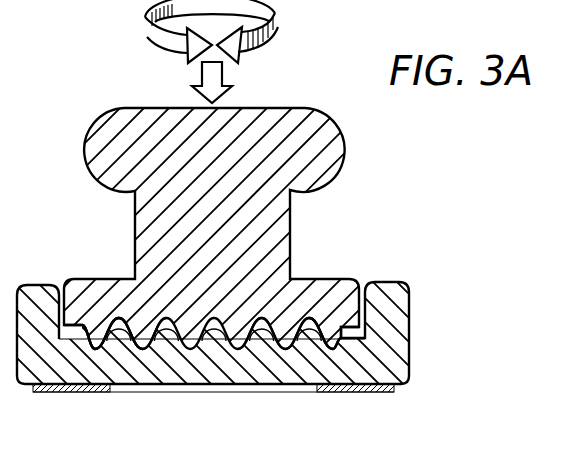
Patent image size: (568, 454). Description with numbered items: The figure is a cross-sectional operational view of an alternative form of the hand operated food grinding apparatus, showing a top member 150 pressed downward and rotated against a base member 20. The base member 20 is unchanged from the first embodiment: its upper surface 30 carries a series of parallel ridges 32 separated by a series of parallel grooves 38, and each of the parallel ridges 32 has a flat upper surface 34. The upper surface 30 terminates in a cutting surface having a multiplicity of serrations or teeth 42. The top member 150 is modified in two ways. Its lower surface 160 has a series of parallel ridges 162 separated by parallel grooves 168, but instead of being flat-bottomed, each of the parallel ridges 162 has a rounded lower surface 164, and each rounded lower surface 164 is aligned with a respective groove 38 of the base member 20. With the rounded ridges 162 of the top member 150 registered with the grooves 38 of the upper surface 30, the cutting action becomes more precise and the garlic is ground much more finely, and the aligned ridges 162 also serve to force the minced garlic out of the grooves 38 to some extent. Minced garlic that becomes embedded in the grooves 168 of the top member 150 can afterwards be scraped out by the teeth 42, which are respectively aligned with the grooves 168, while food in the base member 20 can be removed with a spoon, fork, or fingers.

The top member 150 is at (86, 135).
The base member 20 is at (410, 303).
The upper surface 30 is at (304, 336).
The parallel ridges 32 is at (340, 342).
The flat upper surface 34 is at (264, 318).
The parallel grooves 38 is at (329, 347).
The teeth 42 is at (296, 419).
The lower surface 160 is at (77, 330).
The parallel ridges 162 is at (100, 330).
The rounded lower surface 164 is at (142, 343).
The parallel grooves 168 is at (125, 317).